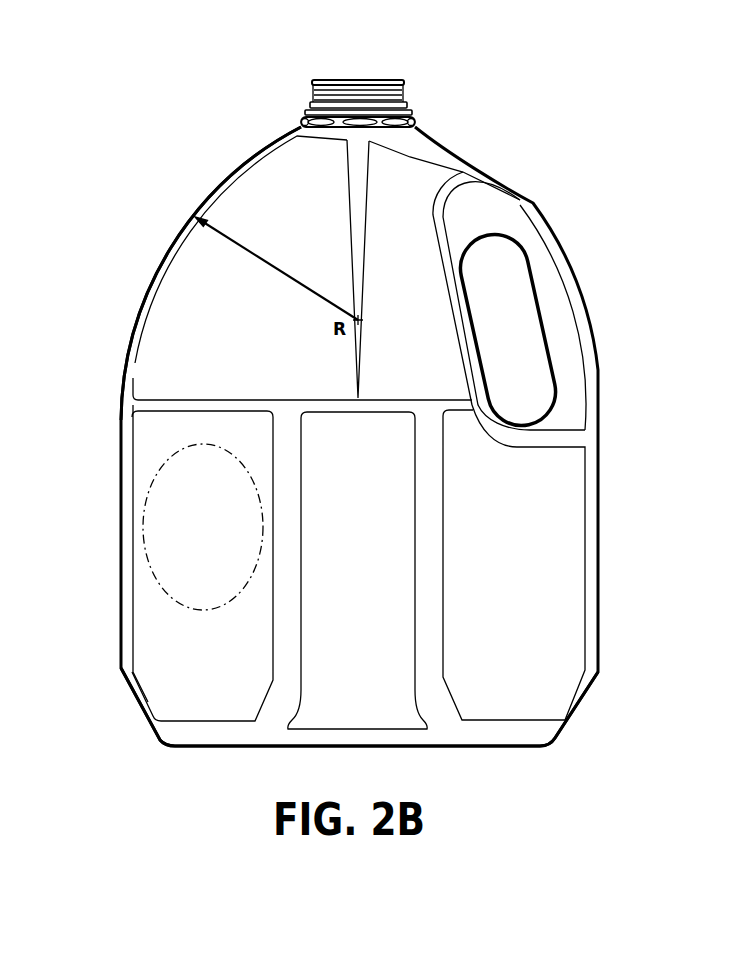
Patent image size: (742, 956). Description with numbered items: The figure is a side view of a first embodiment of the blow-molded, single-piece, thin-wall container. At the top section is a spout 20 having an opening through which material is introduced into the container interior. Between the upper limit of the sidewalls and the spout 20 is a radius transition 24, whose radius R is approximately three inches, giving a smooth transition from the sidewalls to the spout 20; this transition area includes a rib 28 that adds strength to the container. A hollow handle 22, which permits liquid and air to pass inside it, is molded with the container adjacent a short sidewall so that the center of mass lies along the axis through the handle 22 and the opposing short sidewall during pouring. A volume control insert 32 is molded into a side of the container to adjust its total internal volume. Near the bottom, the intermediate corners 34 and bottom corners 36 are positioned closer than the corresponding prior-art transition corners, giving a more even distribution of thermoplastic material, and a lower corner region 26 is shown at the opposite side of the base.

The spout 20 is at (398, 92).
The handle 22 is at (560, 300).
The radius transition 24 is at (220, 186).
The lower left heel 26 is at (143, 727).
The rib 28 is at (357, 184).
The volume control insert 32 is at (160, 550).
The intermediate corner 34 is at (598, 679).
The bottom corner 36 is at (545, 747).